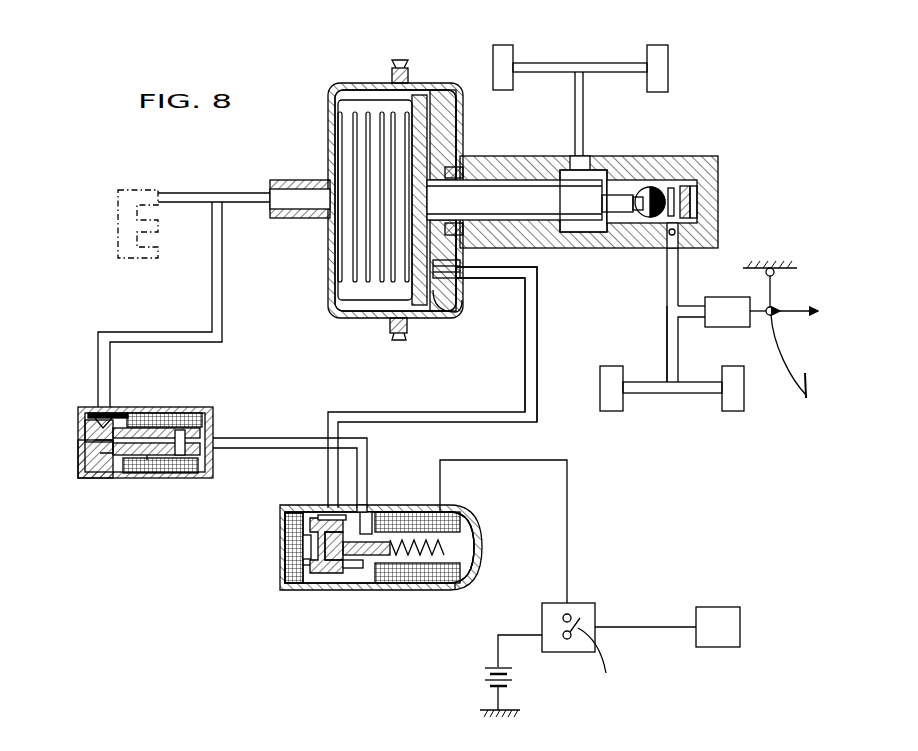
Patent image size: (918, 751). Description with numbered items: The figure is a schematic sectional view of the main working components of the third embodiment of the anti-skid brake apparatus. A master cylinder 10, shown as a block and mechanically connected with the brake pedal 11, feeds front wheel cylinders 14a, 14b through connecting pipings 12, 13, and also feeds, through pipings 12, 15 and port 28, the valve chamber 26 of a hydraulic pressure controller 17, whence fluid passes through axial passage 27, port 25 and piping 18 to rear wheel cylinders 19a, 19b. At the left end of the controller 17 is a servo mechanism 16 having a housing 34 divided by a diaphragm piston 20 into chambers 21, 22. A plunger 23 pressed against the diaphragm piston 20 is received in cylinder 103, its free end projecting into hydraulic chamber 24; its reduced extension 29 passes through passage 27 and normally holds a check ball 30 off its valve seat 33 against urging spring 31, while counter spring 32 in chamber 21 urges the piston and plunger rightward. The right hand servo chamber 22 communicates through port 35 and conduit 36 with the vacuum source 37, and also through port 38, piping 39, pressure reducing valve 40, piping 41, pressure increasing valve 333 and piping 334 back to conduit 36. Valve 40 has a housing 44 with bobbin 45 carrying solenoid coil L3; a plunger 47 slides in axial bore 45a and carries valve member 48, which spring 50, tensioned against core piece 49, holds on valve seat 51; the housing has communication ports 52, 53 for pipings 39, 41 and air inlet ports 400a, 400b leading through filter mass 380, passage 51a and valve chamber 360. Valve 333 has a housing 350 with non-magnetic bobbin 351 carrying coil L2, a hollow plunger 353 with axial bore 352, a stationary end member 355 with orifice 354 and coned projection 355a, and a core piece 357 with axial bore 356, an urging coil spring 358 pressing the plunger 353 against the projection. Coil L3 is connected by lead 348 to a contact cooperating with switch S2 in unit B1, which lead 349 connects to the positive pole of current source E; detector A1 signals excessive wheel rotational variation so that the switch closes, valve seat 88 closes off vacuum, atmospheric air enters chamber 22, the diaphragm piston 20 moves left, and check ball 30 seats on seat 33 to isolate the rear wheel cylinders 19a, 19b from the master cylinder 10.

The servo mechanism 16 is at (372, 80).
The housing 34 is at (330, 150).
The servo chamber 22 is at (440, 145).
The diaphragm piston 20 is at (420, 112).
The chamber 21 is at (360, 293).
The counter spring 32 is at (355, 240).
The port 35 is at (290, 192).
The port 38 is at (458, 300).
The vacuum source 37 is at (130, 190).
The conduit 36 is at (197, 197).
The piping 334 is at (215, 262).
The pressure increasing valve 333 is at (230, 384).
The housing 350 is at (82, 465).
The stationary end member 355 is at (82, 440).
The coned projection 355a is at (105, 455).
The orifice 354 is at (80, 415).
The hollow plunger 353 is at (115, 413).
The bobbin 351 is at (210, 410).
The axial bore 352 is at (140, 460).
The axial bore 356 is at (215, 428).
The core piece 357 is at (200, 452).
The urging coil spring 358 is at (205, 440).
The coil L2 is at (160, 465).
The piping 41 is at (328, 414).
The piping 39 is at (537, 355).
The rear wheel cylinder 19a is at (503, 60).
The rear wheel cylinder 19b is at (657, 55).
The piping 18 is at (578, 98).
The hydraulic pressure controller 17 is at (760, 141).
The cylinder 103 is at (513, 170).
The plunger 23 is at (478, 190).
The hydraulic chamber 24 is at (570, 222).
The port 25 is at (590, 170).
The axial passage 27 is at (605, 230).
The valve seat 33 is at (640, 192).
The check ball 30 is at (655, 200).
The urging spring 31 is at (700, 195).
The valve chamber 26 is at (692, 215).
The reduced extension 29 is at (640, 225).
The port 28 is at (680, 232).
The piping 15 is at (667, 280).
The connecting piping 13 is at (668, 336).
The connecting piping 12 is at (690, 300).
The master cylinder 10 is at (732, 318).
The brake pedal 11 is at (785, 348).
The front wheel cylinder 14a is at (610, 400).
The front wheel cylinder 14b is at (735, 400).
The pressure reducing valve 40 is at (278, 578).
The core piece 49 is at (465, 560).
The bobbin 45 is at (480, 575).
The axial bore 45a is at (440, 585).
The plunger 47 is at (417, 525).
The solenoid coil L3 is at (465, 513).
The air inlet port 400b is at (290, 520).
The air inlet port 400a is at (295, 583).
The filter mass 380 is at (308, 550).
The passage 51a is at (300, 565).
The valve seat 51 is at (316, 575).
The communication port 52 is at (322, 518).
The valve member 48 is at (335, 566).
The housing 44 is at (353, 560).
The valve seat 88 is at (363, 575).
The communication port 53 is at (377, 545).
The valve chamber 360 is at (367, 507).
The spring 50 is at (440, 545).
The lead 348 is at (570, 535).
The switch unit B1 is at (598, 615).
The switch S2 is at (603, 662).
The detector A1 is at (720, 615).
The lead 349 is at (495, 636).
The current source E is at (504, 692).